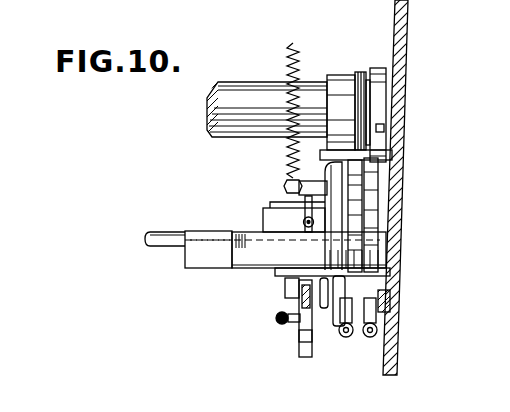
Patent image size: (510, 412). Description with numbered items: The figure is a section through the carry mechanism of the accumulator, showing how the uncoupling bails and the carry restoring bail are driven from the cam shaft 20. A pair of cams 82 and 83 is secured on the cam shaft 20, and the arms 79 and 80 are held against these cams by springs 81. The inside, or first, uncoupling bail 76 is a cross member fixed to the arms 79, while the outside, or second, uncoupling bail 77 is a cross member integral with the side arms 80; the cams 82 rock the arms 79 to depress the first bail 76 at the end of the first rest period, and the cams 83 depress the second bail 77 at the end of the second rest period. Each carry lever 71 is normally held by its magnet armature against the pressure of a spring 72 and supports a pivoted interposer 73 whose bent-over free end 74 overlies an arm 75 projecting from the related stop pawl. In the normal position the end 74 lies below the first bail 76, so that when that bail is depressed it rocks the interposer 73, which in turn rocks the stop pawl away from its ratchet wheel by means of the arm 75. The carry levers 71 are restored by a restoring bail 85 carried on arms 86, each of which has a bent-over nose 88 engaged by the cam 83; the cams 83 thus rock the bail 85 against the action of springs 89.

The cam shaft 20 is at (228, 115).
The springs 89 is at (290, 68).
The cams 82 is at (358, 76).
The cams 83 is at (382, 128).
The nose 88 is at (375, 147).
The arms 86 is at (327, 190).
The arms 79 is at (365, 180).
The arms 80 is at (370, 212).
The spring 72 is at (270, 220).
The restoring bail 85 is at (160, 246).
The first uncoupling bail 76 is at (203, 262).
The second uncoupling bail 77 is at (246, 264).
The interposer 73 is at (288, 306).
The carry lever 71 is at (304, 332).
The arm 75 is at (311, 312).
The free end 74 is at (313, 292).
The springs 81 is at (372, 338).